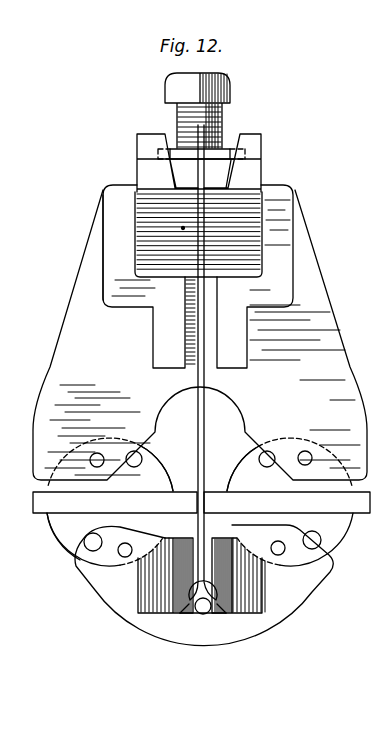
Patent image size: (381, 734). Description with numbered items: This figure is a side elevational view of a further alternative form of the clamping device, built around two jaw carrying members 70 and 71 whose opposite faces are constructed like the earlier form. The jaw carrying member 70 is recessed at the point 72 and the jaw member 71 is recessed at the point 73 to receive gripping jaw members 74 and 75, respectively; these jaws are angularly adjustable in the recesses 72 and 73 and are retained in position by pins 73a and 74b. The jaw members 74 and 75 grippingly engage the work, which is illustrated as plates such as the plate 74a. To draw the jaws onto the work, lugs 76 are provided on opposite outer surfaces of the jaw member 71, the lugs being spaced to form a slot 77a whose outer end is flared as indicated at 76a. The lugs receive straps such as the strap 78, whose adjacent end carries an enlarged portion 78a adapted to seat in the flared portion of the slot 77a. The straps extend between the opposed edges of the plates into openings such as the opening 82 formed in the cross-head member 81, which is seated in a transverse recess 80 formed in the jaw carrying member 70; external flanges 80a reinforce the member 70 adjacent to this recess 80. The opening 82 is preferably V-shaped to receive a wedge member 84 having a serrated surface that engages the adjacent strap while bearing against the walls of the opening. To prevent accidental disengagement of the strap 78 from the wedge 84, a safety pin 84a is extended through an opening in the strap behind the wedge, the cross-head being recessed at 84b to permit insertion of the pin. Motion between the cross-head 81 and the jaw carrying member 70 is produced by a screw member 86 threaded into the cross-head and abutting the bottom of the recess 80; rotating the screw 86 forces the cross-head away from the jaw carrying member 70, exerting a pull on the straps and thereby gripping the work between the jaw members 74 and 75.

The jaw carrying member 70 is at (333, 377).
The jaw carrying member 71 is at (307, 593).
The recess 72 is at (128, 442).
The recess 73 is at (107, 567).
The pin 73a is at (101, 453).
The gripping jaw member 74 is at (190, 457).
The plate 74a is at (68, 538).
The pin 74b is at (112, 558).
The gripping jaw member 75 is at (46, 546).
The lug 76 is at (180, 614).
The flared outer end 76a is at (184, 614).
The slot 77a is at (197, 567).
The strap 78 is at (197, 436).
The enlarged portion 78a is at (230, 596).
The transverse recess 80 is at (247, 272).
The external flange 80a is at (103, 285).
The cross-head member 81 is at (250, 217).
The opening 82 is at (182, 228).
The wedge member 84 is at (180, 173).
The safety pin 84a is at (252, 156).
The recess 84b is at (157, 155).
The screw member 86 is at (223, 89).